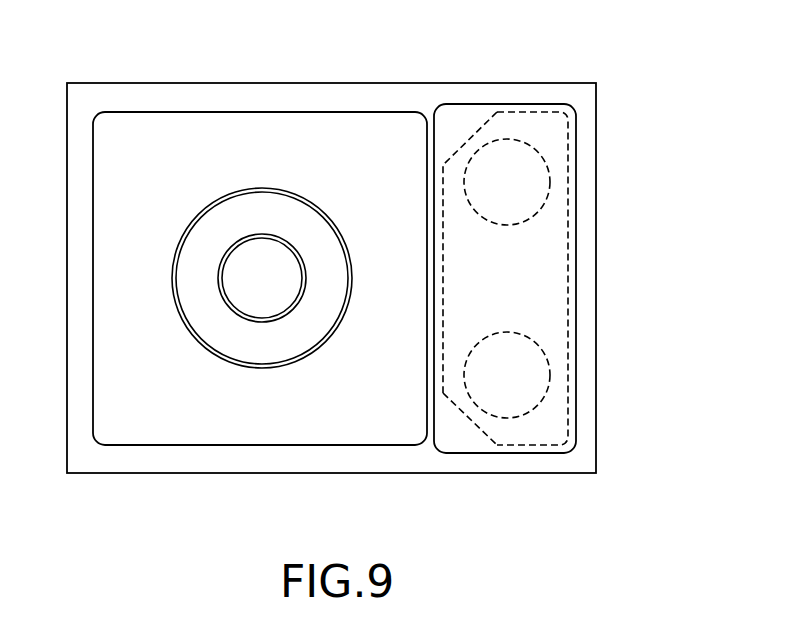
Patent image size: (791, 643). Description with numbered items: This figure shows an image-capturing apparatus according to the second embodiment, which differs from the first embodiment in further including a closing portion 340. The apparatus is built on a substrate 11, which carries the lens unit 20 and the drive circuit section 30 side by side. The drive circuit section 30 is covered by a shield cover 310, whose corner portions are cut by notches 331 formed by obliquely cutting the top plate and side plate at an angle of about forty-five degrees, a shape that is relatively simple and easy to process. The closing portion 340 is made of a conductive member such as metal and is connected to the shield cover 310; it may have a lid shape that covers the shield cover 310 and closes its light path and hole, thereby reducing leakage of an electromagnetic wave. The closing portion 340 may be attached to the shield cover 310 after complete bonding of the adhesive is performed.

The substrate 11 is at (212, 83).
The lens unit 20 is at (286, 106).
The drive circuit section 30 is at (537, 274).
The shield cover 310 is at (567, 237).
The notch 331 is at (468, 433).
The closing portion 340 is at (478, 104).